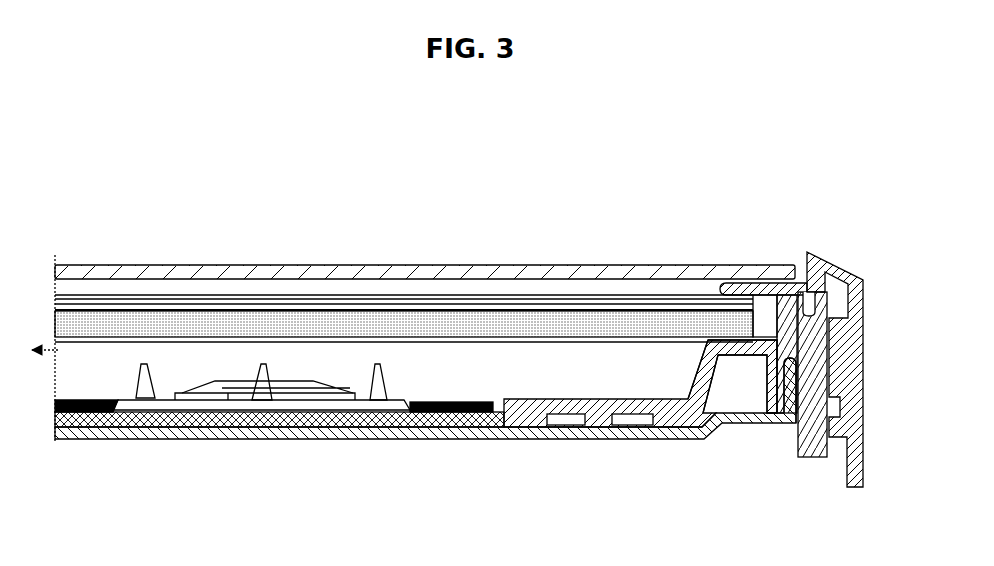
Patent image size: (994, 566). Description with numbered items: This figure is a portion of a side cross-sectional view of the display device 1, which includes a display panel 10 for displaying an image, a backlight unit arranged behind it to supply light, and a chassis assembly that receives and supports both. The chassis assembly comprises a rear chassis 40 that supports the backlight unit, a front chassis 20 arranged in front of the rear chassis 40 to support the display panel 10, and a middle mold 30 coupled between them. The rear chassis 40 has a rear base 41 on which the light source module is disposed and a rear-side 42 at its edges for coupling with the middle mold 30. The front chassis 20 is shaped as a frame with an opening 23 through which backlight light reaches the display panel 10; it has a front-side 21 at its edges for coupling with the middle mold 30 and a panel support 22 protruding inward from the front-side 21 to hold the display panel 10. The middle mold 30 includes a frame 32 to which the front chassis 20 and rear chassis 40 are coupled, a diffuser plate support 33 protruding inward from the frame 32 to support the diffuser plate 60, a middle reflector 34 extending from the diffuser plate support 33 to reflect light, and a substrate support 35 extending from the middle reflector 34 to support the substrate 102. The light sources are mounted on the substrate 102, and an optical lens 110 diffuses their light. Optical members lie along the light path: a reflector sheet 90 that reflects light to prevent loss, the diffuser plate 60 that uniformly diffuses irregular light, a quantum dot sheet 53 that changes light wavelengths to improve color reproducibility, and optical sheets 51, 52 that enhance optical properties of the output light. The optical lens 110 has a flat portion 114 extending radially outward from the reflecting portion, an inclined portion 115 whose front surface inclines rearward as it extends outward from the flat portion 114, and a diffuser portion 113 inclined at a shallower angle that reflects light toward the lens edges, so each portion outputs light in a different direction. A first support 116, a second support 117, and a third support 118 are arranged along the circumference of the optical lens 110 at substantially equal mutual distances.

The display device 1 is at (446, 127).
The display panel 10 is at (496, 268).
The front chassis 20 is at (852, 261).
The front-side 21 is at (853, 332).
The panel support 22 is at (761, 292).
The opening 23 is at (718, 290).
The middle mold 30 is at (808, 462).
The frame 32 is at (809, 296).
The diffuser plate support 33 is at (748, 355).
The middle reflector 34 is at (708, 385).
The substrate support 35 is at (517, 410).
The rear chassis 40 is at (572, 448).
The rear base 41 is at (618, 440).
The rear-side 42 is at (800, 392).
The optical sheet 51 is at (559, 296).
The optical sheet 52 is at (579, 305).
The quantum dot sheet 53 is at (620, 312).
The diffuser plate 60 is at (447, 325).
The reflector sheet 90 is at (92, 401).
The substrate 102 is at (274, 420).
The optical lens 110 is at (398, 378).
The diffuser portion 113 is at (167, 410).
The flat portion 114 is at (228, 381).
The inclined portion 115 is at (224, 396).
The first support 116 is at (141, 364).
The second support 117 is at (265, 362).
The third support 118 is at (377, 362).